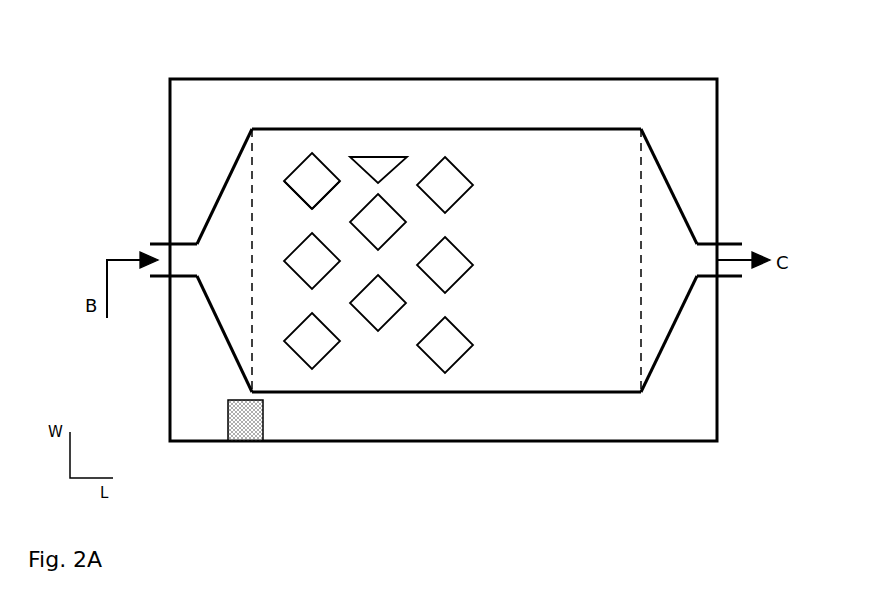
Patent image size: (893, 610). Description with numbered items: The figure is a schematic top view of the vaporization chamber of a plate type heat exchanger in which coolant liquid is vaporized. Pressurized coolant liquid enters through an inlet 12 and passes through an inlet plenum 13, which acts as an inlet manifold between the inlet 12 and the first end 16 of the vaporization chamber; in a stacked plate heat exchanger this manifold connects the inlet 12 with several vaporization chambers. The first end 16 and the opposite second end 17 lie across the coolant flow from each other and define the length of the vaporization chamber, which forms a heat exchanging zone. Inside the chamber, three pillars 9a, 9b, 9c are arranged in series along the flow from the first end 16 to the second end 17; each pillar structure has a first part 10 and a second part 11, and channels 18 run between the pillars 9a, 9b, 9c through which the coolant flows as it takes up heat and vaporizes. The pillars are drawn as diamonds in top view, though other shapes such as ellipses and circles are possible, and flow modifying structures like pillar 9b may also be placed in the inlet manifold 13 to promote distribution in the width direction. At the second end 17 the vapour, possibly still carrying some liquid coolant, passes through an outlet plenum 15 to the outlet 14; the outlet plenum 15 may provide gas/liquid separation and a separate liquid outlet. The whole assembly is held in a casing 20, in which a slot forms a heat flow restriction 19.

The pillar 9a is at (302, 176).
The pillar 9b is at (378, 170).
The pillar 9c is at (451, 175).
The first part 10 is at (300, 198).
The second part 11 is at (321, 199).
The inlet 12 is at (182, 243).
The inlet plenum 13 is at (240, 337).
The outlet 14 is at (708, 243).
The outlet plenum 15 is at (650, 340).
The first end 16 is at (252, 129).
The second end 17 is at (641, 129).
The channels 18 is at (420, 308).
The heat flow restriction 19 is at (248, 441).
The casing 20 is at (198, 428).